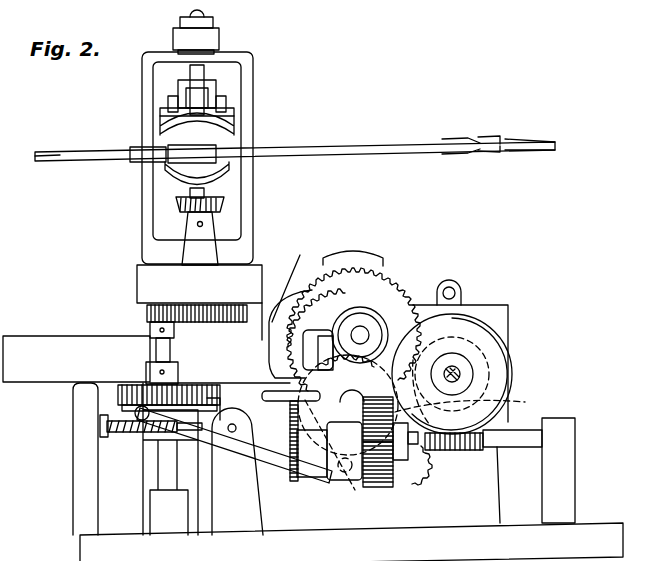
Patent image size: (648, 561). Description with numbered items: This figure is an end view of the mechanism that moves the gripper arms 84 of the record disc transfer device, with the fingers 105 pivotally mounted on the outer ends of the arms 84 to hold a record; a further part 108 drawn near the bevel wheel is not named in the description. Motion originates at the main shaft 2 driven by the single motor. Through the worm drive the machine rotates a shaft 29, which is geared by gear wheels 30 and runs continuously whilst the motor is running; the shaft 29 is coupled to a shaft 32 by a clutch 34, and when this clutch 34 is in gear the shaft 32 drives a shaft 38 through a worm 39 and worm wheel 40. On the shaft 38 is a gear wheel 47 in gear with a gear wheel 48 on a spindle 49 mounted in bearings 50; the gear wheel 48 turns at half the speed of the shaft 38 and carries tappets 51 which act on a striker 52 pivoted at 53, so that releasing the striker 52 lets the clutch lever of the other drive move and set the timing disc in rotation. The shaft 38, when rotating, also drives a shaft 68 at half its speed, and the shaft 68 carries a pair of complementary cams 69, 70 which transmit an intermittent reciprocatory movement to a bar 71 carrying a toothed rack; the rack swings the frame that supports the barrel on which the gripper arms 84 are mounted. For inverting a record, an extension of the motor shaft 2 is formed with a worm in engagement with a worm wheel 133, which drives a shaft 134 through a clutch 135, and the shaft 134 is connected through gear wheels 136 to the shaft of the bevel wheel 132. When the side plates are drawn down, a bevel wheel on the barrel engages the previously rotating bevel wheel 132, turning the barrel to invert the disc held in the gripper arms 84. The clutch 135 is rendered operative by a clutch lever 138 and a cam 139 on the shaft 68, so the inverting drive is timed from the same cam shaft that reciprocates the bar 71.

The main shaft 2 is at (214, 398).
The shaft 29 is at (327, 478).
The gear wheels 30 is at (292, 470).
The shaft 32 is at (512, 449).
The clutch 34 is at (398, 470).
The shaft 38 is at (455, 372).
The worm 39 is at (512, 372).
The worm wheel 40 is at (462, 452).
The gear wheel 47 is at (480, 350).
The gear wheel 48 is at (362, 335).
The spindle 49 is at (374, 398).
The bearings 50 is at (348, 400).
The tappets 51 is at (500, 402).
The striker 52 is at (274, 402).
The pivot 53 is at (360, 482).
The shaft 68 is at (380, 262).
The cam 69 is at (292, 296).
The cam 70 is at (358, 268).
The bar 71 is at (260, 332).
The gripper arms 84 is at (78, 150).
The fingers 105 is at (527, 142).
The bevel gear 108 is at (168, 180).
The bevel wheel 132 is at (225, 190).
The worm wheel 133 is at (103, 428).
The shaft 134 is at (155, 352).
The clutch 135 is at (150, 388).
The gear wheels 136 is at (160, 308).
The clutch lever 138 is at (229, 470).
The cam 139 is at (318, 354).